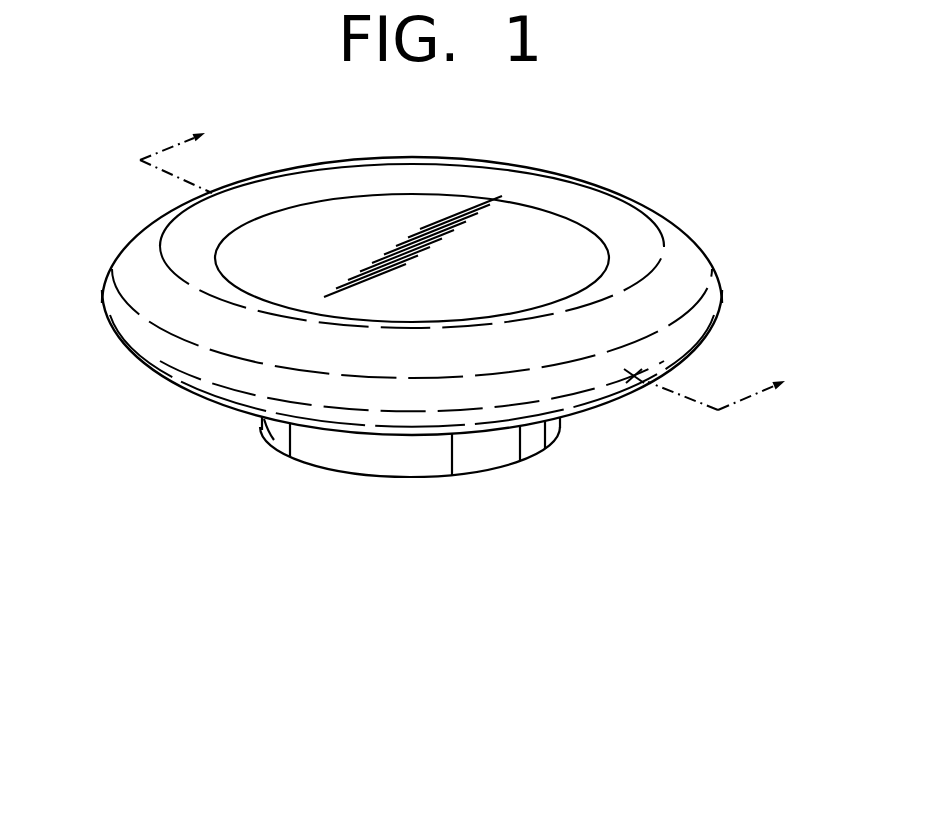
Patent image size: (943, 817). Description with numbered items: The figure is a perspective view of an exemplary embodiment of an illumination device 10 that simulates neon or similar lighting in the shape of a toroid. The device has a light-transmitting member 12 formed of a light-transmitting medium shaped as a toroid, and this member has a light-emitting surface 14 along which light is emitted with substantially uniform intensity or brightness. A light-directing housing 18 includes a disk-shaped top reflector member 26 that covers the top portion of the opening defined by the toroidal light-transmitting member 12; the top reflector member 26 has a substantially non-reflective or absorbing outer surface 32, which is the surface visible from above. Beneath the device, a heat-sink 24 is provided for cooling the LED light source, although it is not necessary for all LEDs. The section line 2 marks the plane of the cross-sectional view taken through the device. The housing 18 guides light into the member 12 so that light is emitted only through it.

The illumination device 10 is at (103, 97).
The light-transmitting member 12 is at (697, 250).
The light-emitting surface 14 is at (628, 341).
The light-directing housing 18 is at (577, 240).
The heat-sink 24 is at (490, 448).
The top reflector member 26 is at (520, 224).
The outer surface 32 is at (311, 259).
The section line 2- 2 is at (473, 263).